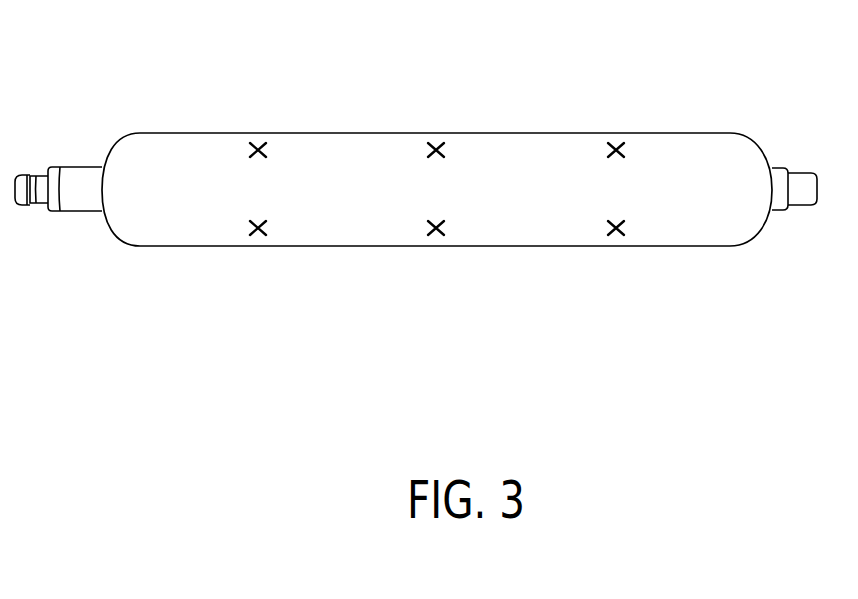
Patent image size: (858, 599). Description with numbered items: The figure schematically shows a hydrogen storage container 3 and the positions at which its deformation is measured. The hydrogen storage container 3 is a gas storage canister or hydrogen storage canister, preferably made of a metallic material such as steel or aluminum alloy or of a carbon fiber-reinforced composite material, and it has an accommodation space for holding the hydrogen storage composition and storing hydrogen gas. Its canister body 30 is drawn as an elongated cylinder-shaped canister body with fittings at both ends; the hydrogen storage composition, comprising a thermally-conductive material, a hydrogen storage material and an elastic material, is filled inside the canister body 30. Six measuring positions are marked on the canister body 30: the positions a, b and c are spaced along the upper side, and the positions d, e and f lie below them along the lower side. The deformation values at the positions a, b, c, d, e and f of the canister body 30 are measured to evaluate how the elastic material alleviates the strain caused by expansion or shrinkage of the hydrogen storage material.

The hydrogen storage container 3 is at (431, 163).
The canister body 30 is at (146, 160).
The position a is at (258, 125).
The position b is at (436, 125).
The position c is at (616, 125).
The position d is at (258, 253).
The position e is at (436, 255).
The position f is at (615, 252).